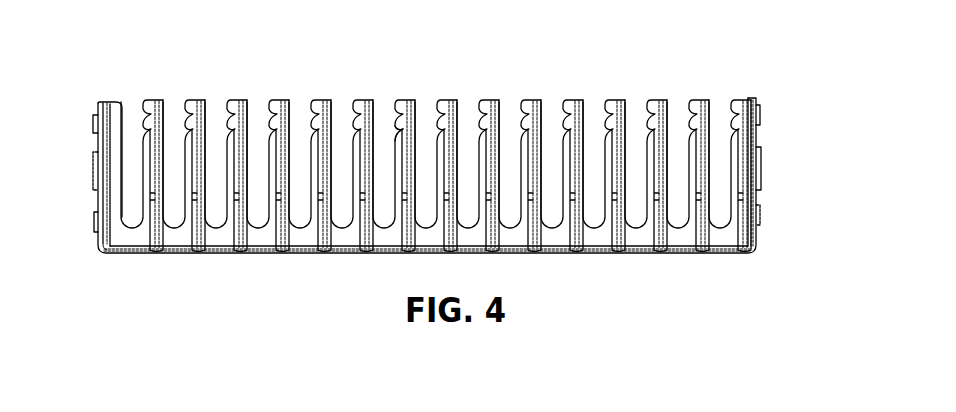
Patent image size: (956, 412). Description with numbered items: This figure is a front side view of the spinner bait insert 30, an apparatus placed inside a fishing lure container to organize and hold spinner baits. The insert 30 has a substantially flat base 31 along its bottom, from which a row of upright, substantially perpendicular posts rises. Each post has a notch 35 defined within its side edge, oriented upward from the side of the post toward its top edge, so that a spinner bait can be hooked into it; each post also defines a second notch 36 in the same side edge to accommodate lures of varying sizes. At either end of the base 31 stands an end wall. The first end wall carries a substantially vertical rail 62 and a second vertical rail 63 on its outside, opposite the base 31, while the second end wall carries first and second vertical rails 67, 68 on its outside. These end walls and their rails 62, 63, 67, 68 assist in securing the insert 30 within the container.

The spinner bait insert 30 is at (548, 64).
The base 31 is at (550, 251).
The notch 35 is at (397, 118).
The second notch 36 is at (395, 132).
The vertical rail 62 is at (93, 170).
The second vertical rail 63 is at (93, 120).
The first vertical rail 67 is at (764, 165).
The second vertical rail 68 is at (761, 112).